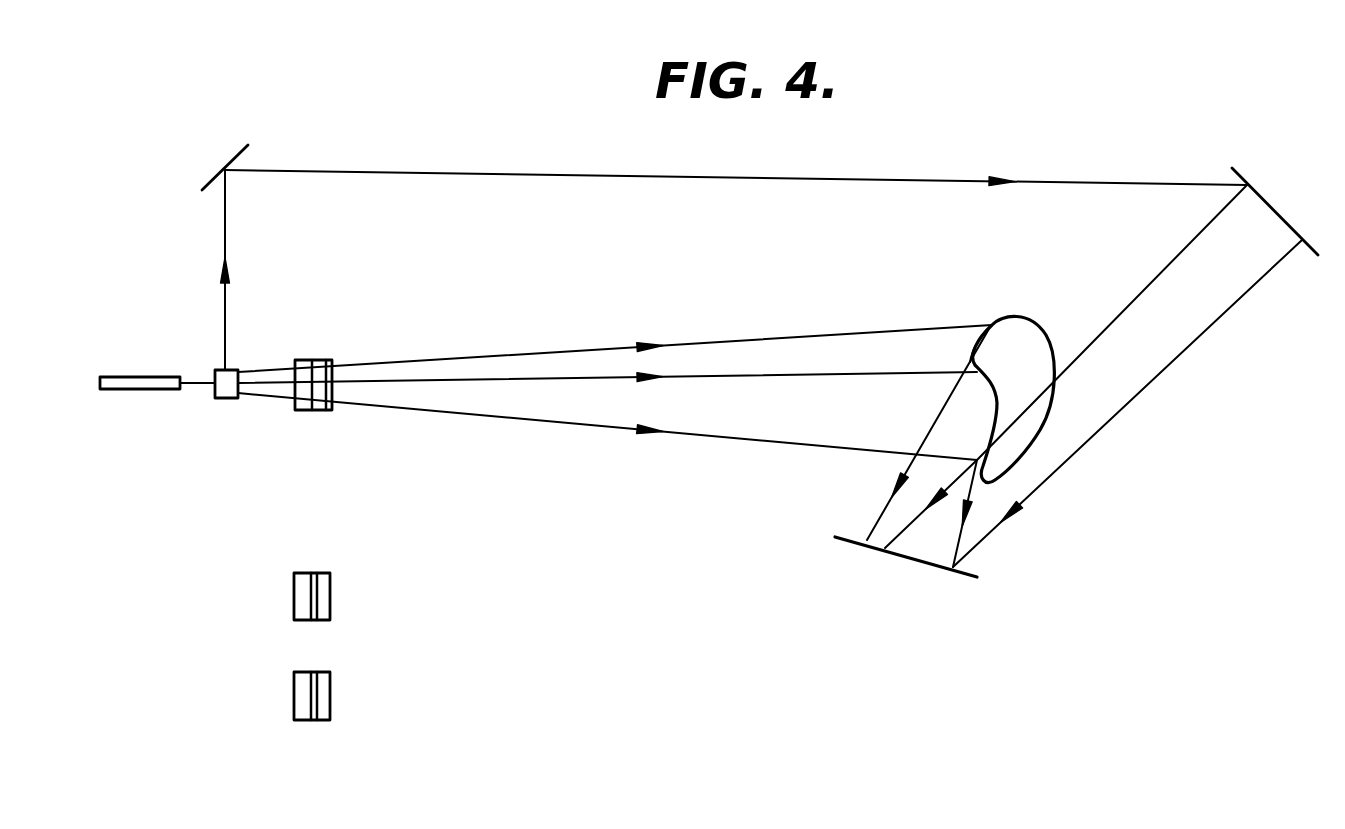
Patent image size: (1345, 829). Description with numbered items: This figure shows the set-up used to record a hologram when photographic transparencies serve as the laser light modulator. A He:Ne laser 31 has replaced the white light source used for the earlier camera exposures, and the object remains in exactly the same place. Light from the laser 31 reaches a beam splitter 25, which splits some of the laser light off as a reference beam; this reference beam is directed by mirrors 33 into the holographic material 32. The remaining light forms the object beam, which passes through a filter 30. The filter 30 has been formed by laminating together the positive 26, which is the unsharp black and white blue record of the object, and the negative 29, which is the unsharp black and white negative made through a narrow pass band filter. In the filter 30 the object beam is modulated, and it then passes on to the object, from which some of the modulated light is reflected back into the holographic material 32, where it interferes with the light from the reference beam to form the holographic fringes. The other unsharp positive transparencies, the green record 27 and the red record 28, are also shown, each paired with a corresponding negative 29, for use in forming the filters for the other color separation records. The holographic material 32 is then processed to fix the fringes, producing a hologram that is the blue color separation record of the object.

The beam splitter 25 is at (230, 370).
The positive transparency 26 is at (302, 410).
The positive transparency 27 is at (300, 598).
The positive transparency 28 is at (300, 702).
The negative 29 is at (322, 410).
The filter 30 is at (316, 360).
The He:Ne laser 31 is at (122, 378).
The holographic material 32 is at (965, 580).
The mirrors 33 is at (213, 170).